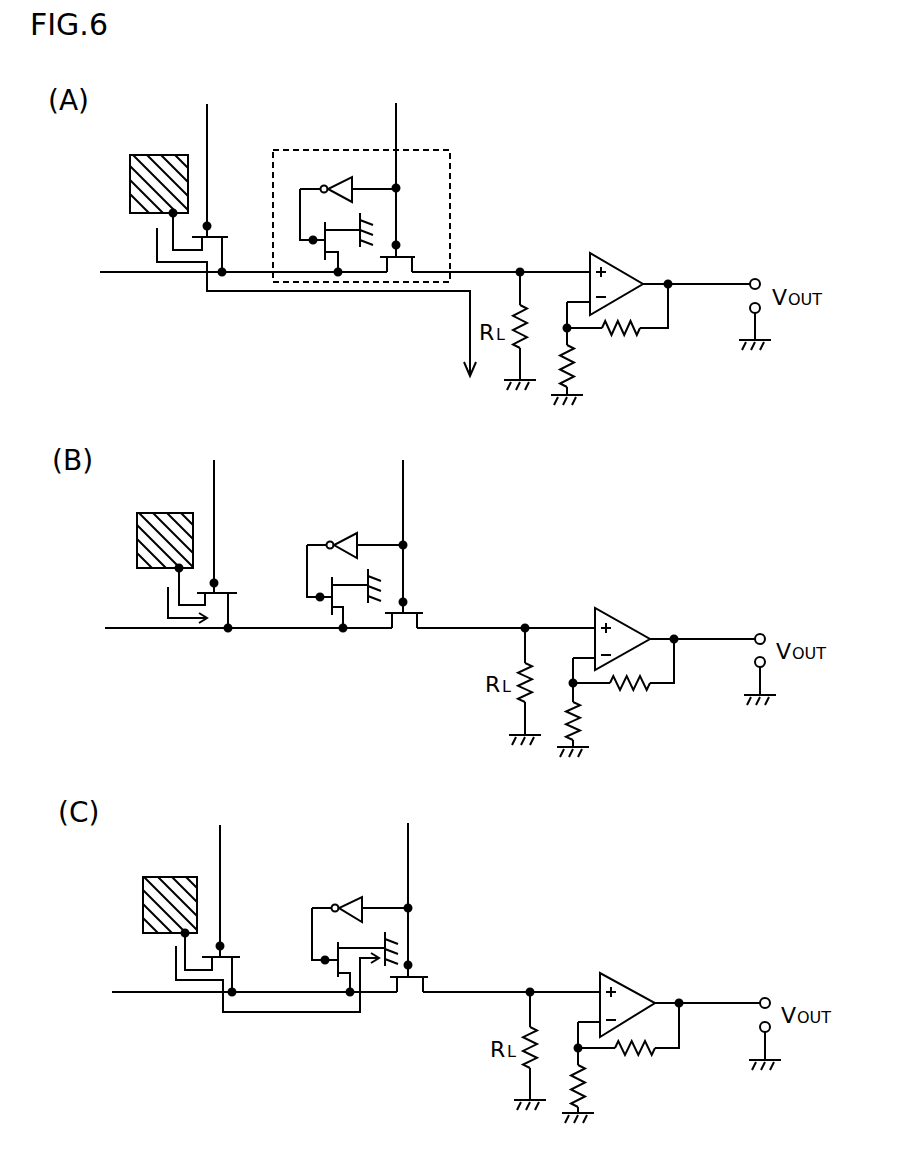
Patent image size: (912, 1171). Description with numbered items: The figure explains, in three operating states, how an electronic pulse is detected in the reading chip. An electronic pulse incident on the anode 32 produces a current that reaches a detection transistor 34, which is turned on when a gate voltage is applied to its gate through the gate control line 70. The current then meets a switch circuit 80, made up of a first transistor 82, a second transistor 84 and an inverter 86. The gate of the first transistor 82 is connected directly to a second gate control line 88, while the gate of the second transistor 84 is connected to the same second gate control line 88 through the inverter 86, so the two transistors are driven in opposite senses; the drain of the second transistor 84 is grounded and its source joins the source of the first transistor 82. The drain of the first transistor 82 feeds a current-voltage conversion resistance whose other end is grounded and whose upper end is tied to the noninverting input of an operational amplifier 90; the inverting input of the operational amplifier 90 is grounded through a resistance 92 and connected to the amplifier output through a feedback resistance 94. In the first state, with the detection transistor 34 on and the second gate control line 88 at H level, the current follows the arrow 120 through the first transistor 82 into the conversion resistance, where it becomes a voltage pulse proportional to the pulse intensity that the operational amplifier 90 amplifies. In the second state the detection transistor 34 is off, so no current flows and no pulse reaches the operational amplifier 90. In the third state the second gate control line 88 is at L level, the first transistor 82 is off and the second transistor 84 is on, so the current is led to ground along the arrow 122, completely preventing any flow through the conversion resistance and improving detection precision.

The anode 32 is at (130, 180).
The detection transistor 34 is at (227, 233).
The gate control line 70 is at (207, 124).
The switch circuit 80 is at (450, 160).
The first transistor 82 is at (415, 250).
The second transistor 84 is at (315, 262).
The inverter 86 is at (335, 175).
The second gate control line 88 is at (398, 108).
The operational amplifier 90 is at (617, 264).
The resistance 92 is at (572, 358).
The feedback resistance 94 is at (628, 340).
The arrow 120 is at (413, 293).
The arrow 122 is at (250, 1015).